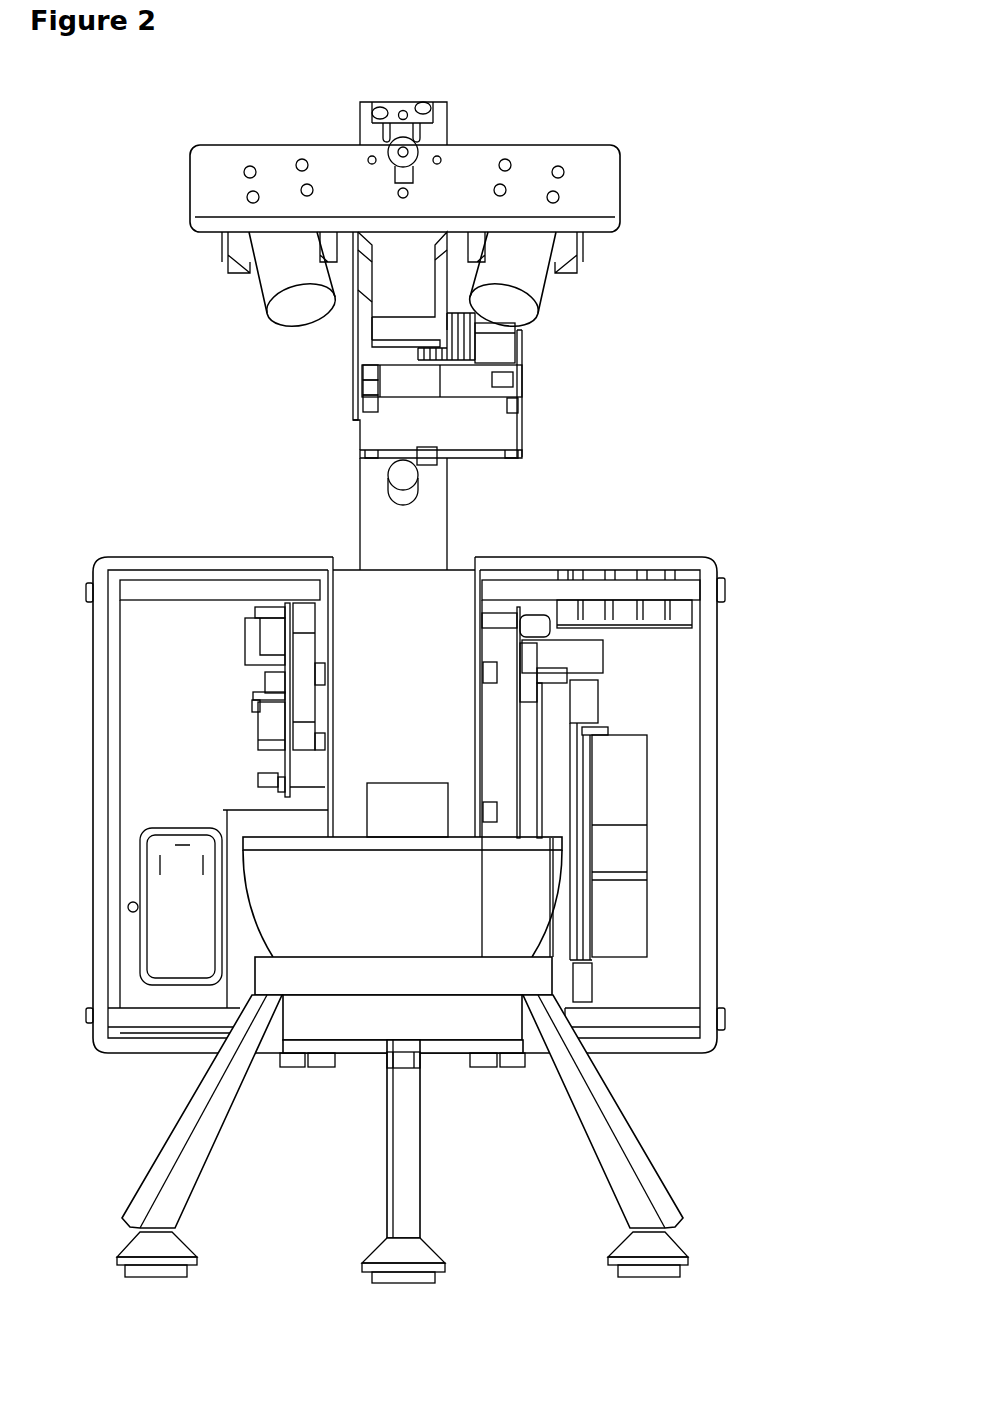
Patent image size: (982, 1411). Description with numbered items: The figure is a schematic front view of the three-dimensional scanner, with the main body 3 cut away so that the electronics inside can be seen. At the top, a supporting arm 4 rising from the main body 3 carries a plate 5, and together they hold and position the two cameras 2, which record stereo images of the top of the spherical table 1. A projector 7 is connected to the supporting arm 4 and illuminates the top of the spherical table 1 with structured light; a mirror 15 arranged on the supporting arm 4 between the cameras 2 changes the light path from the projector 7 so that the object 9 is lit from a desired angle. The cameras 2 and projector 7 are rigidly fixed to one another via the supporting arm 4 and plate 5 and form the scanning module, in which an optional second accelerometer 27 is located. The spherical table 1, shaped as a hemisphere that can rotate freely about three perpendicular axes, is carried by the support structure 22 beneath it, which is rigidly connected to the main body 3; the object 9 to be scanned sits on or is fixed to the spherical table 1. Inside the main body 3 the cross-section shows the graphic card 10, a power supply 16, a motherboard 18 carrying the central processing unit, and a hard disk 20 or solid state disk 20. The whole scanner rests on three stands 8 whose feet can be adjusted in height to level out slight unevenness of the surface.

The spherical table 1 is at (282, 915).
The cameras 2 is at (244, 250).
The main body 3 is at (94, 486).
The supporting arm 4 is at (365, 137).
The plate 5 is at (475, 162).
The projector 7 is at (500, 432).
The stands 8 is at (188, 1190).
The object 9 is at (401, 795).
The graphic card 10 is at (598, 610).
The mirror 15 is at (417, 297).
The power supply 16 is at (217, 806).
The motherboard 18 is at (634, 727).
The hard disk 20 is at (308, 600).
The support structure 22 is at (435, 1012).
The second accelerometer 27 is at (227, 258).